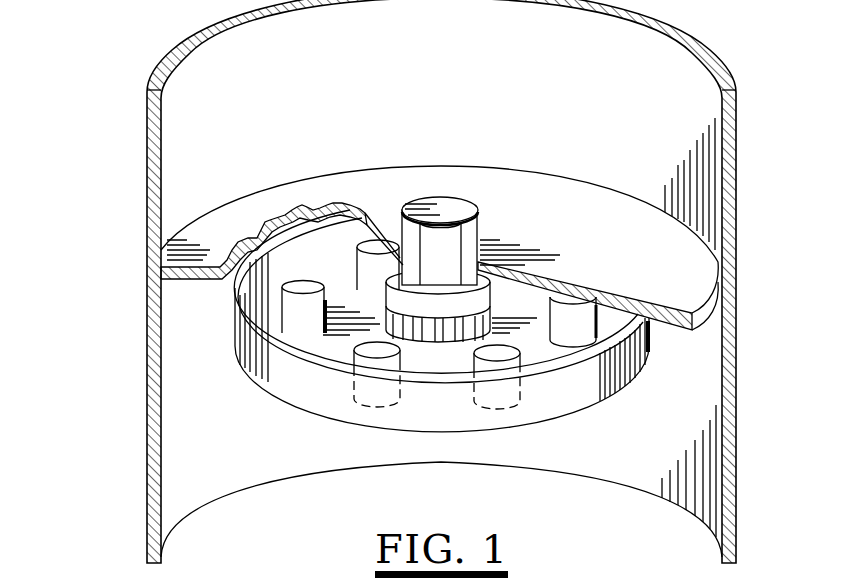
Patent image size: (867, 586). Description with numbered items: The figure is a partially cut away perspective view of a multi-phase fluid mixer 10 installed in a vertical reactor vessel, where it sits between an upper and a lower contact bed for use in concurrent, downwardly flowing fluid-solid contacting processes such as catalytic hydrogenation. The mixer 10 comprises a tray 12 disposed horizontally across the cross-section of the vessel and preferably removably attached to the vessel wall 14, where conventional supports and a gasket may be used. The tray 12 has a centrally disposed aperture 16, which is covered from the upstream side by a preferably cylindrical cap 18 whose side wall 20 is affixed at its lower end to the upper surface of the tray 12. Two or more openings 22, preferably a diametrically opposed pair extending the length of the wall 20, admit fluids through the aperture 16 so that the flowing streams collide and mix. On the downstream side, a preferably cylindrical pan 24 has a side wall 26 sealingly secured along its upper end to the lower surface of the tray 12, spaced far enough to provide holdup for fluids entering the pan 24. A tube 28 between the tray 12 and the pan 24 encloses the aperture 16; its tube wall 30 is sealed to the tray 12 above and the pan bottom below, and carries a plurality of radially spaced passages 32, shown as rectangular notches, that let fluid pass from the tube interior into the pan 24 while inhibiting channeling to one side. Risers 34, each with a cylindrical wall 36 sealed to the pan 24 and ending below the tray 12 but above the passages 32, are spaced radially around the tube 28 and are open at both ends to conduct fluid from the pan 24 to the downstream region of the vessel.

The mixer 10 is at (384, 281).
The tray 12 is at (408, 185).
The vessel wall 14 is at (146, 297).
The aperture 16 is at (444, 336).
The cap 18 is at (465, 205).
The side wall 20 is at (449, 214).
The openings 22 is at (437, 242).
The pan 24 is at (648, 338).
The side wall 26 is at (597, 383).
The tube 28 is at (393, 349).
The tube wall 30 is at (442, 313).
The passages 32 is at (424, 322).
The risers 34 is at (302, 318).
The cylindrical wall 36 is at (280, 300).